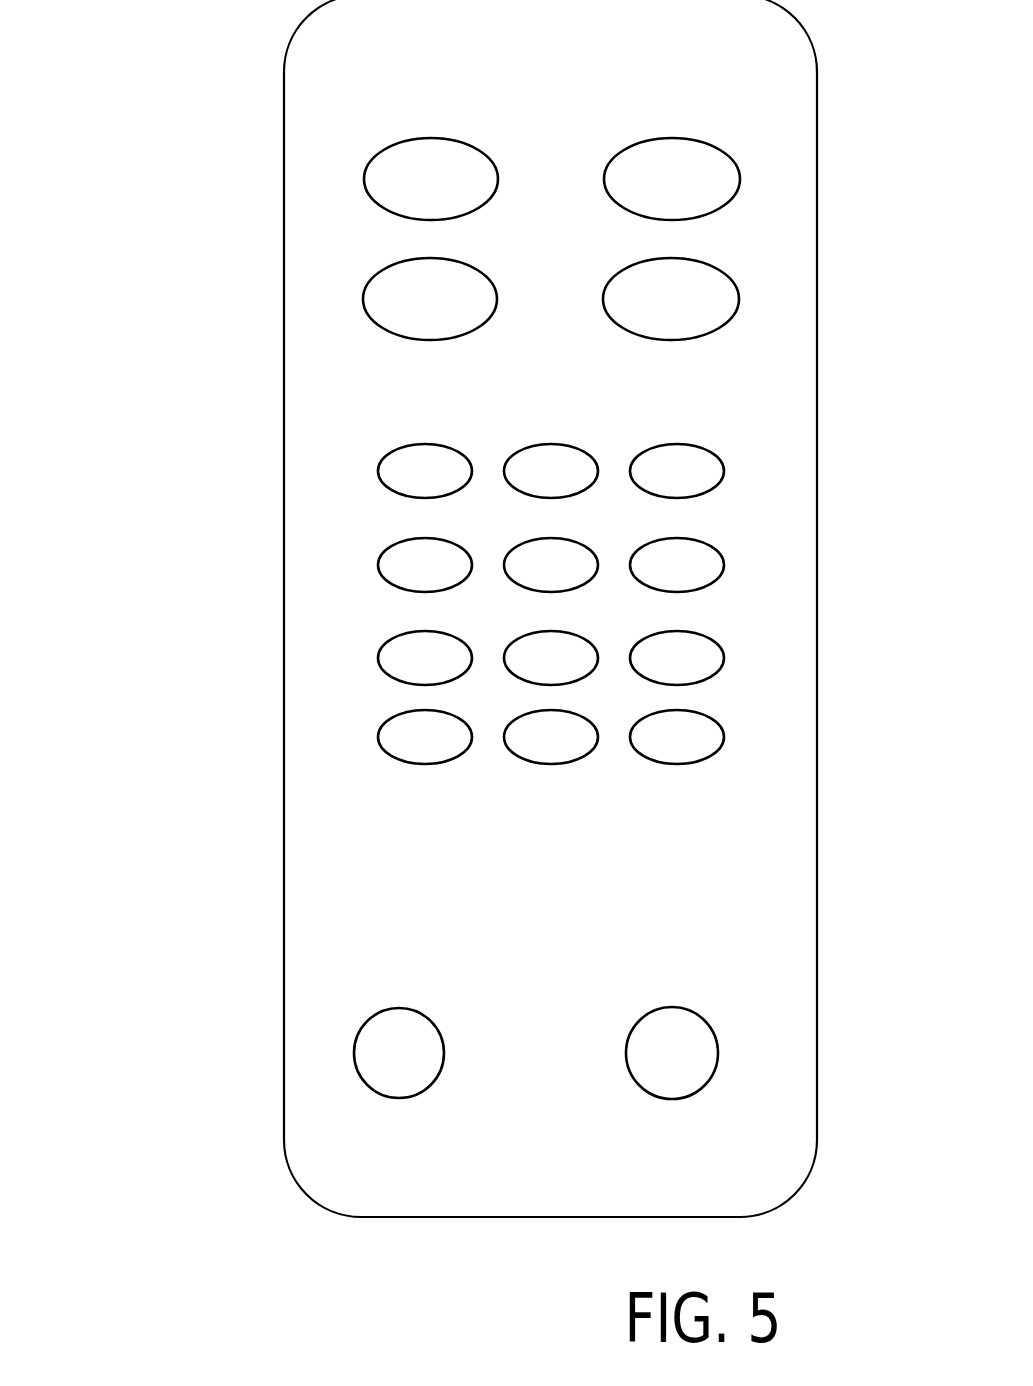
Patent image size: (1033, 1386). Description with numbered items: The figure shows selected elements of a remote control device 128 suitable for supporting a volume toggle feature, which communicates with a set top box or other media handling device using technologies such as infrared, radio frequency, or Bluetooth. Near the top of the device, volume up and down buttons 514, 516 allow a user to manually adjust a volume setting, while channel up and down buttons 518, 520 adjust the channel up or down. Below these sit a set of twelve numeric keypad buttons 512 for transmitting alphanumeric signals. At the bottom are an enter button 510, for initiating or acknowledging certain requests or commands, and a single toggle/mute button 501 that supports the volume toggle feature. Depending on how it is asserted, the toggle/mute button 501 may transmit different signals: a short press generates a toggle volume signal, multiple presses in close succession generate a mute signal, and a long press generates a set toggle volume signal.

The remote control device 128 is at (735, 1178).
The toggle/mute button 501 is at (422, 1068).
The enter button 510 is at (697, 1068).
The numeric keypad buttons 512 is at (247, 589).
The volume up button 514 is at (407, 193).
The volume down button 516 is at (407, 313).
The channel up button 518 is at (647, 193).
The channel down button 520 is at (693, 313).